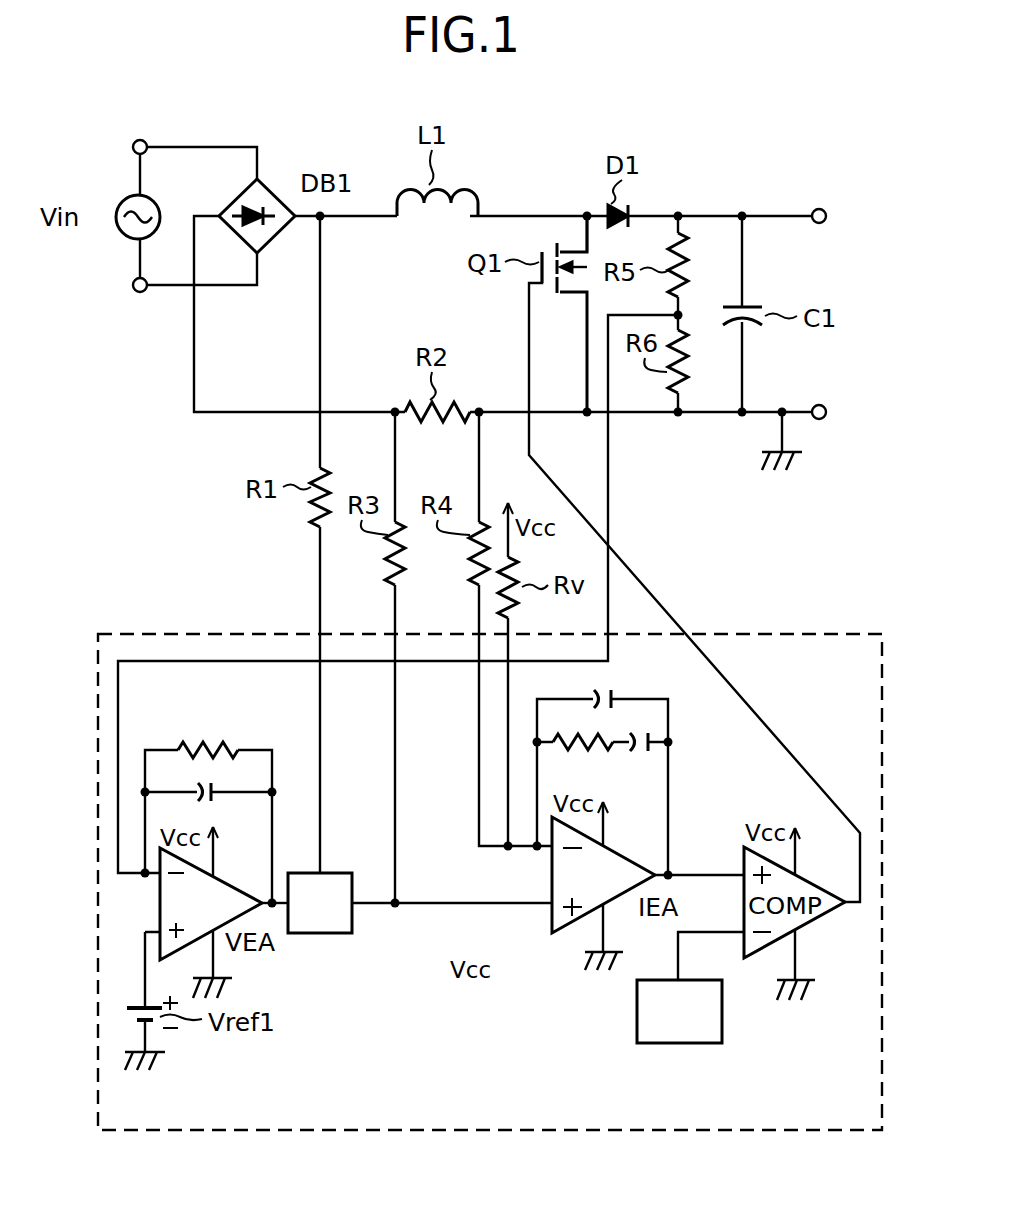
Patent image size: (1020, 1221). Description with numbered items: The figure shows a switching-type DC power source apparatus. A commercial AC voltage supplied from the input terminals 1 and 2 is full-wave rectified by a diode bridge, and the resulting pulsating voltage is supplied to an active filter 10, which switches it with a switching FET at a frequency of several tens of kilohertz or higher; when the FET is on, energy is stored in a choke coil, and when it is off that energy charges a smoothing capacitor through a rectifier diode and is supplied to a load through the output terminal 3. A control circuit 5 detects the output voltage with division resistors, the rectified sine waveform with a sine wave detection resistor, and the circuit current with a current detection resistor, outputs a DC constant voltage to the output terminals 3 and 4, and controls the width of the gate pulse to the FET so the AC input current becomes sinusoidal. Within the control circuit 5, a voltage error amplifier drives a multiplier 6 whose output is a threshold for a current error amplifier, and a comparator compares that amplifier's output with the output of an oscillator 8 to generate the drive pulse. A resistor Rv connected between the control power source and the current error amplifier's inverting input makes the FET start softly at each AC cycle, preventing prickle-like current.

The input terminal 1 is at (133, 147).
The input terminal 2 is at (133, 285).
The output terminal 3 is at (826, 216).
The output terminal 4 is at (826, 412).
The control circuit 5 is at (192, 633).
The multiplier 6 is at (348, 873).
The oscillator 8 is at (635, 1003).
The active filter 10 is at (546, 180).